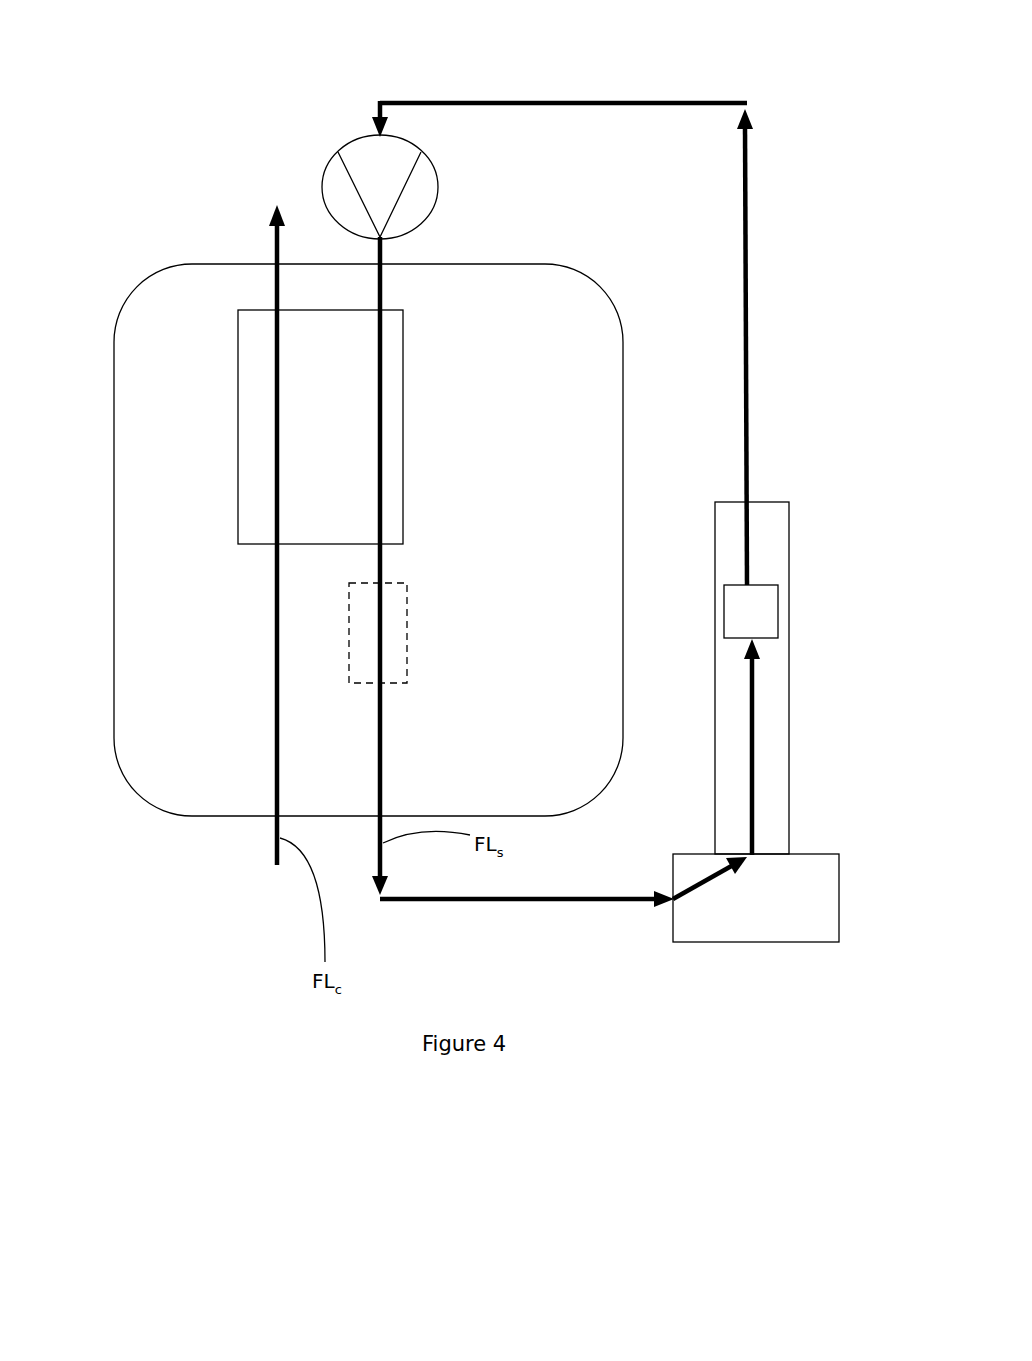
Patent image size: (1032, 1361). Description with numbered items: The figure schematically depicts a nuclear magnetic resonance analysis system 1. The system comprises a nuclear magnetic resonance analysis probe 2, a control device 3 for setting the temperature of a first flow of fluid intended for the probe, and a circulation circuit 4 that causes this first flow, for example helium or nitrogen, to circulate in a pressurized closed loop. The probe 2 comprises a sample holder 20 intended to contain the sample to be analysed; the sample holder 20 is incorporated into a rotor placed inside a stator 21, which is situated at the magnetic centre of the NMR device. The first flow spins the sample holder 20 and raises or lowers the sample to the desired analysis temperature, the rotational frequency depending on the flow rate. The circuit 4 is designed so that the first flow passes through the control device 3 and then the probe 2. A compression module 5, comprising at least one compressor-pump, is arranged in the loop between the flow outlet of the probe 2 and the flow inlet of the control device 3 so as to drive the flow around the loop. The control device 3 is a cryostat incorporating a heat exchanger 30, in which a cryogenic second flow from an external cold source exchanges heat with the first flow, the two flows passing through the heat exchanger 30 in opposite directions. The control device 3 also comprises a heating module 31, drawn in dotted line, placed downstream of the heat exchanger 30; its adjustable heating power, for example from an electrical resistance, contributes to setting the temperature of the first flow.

The nuclear magnetic resonance analysis system 1 is at (194, 1025).
The nuclear magnetic resonance analysis probe 2 is at (788, 966).
The control device 3 is at (170, 810).
The circulation circuit 4 is at (577, 100).
The compression module 5 is at (355, 135).
The sample holder 20 is at (755, 607).
The stator 21 is at (760, 500).
The heat exchanger 30 is at (238, 354).
The heating module 31 is at (407, 602).